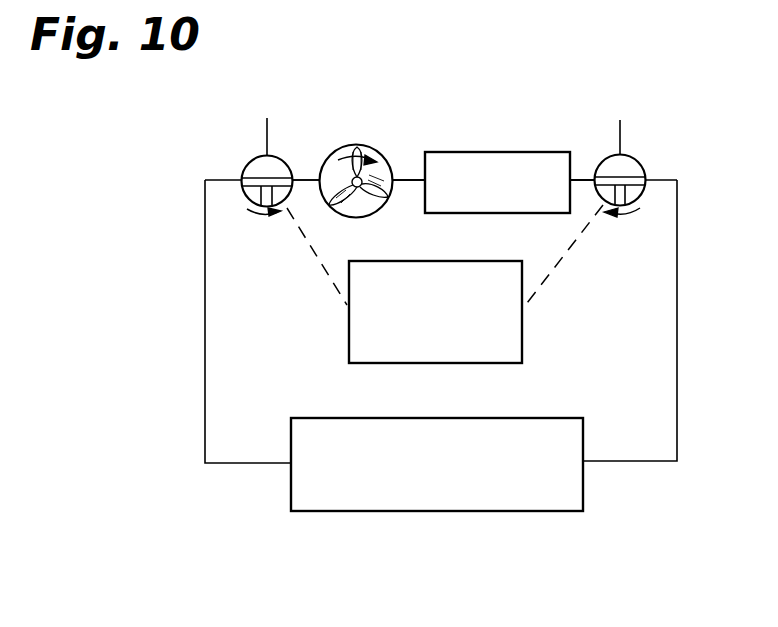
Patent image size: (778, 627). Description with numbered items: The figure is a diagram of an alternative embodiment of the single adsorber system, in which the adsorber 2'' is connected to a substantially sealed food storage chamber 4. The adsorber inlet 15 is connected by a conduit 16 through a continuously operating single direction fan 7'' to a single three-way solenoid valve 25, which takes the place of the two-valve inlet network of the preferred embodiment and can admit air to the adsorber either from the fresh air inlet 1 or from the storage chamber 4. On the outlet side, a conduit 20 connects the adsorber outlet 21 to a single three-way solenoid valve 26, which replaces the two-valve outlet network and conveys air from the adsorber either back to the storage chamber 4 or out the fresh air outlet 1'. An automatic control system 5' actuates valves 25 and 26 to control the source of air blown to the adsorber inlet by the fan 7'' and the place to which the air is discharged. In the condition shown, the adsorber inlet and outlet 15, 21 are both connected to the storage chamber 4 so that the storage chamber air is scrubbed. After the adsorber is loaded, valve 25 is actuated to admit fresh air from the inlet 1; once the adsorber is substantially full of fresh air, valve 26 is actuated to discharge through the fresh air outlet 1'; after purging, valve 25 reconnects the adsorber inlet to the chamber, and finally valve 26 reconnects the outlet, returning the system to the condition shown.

The fresh air inlet 1 is at (256, 124).
The fresh air outlet 1' is at (626, 123).
The three-way solenoid valve 25 is at (283, 163).
The three-way solenoid valve 26 is at (642, 166).
The fan 7'' is at (361, 153).
The adsorber inlet 15 is at (411, 178).
The conduit 16 is at (305, 182).
The adsorber 2'' is at (497, 162).
The adsorber outlet 21 is at (572, 179).
The conduit 20 is at (582, 183).
The automatic control system 5' is at (435, 293).
The food storage chamber 4 is at (448, 418).